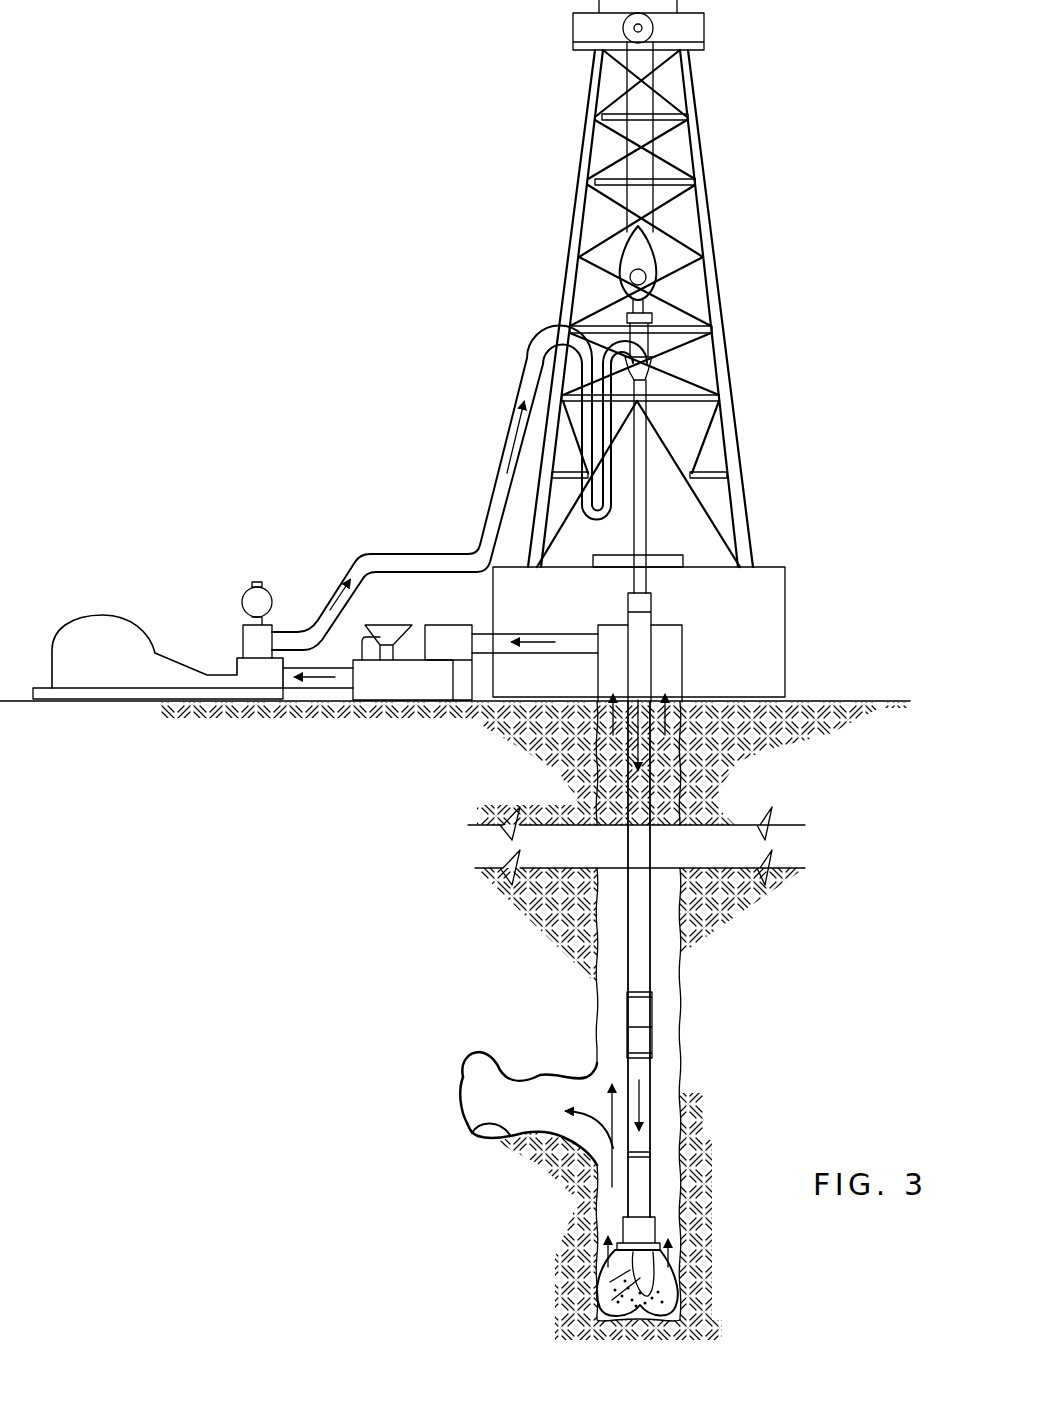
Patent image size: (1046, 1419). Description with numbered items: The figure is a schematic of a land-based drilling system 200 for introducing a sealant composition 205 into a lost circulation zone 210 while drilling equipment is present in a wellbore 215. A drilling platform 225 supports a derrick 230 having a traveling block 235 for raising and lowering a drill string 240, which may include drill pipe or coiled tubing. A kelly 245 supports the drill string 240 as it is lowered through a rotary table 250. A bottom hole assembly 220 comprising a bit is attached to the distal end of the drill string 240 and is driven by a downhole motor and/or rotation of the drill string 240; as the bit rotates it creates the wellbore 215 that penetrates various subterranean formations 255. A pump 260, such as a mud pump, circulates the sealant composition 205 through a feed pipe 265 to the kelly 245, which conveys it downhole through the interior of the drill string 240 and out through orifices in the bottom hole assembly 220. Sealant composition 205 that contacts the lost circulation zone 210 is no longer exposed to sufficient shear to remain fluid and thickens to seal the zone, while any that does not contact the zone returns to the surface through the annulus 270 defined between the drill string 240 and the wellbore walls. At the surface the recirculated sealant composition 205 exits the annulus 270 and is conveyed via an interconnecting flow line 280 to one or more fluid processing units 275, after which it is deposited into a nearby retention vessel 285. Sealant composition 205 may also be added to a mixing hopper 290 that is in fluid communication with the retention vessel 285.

The system 200 is at (384, 216).
The sealant composition 205 is at (342, 592).
The lost circulation zone 210 is at (468, 1140).
The wellbore 215 is at (680, 1036).
The bottom hole assembly 220 is at (657, 1280).
The drilling platform 225 is at (788, 634).
The derrick 230 is at (710, 302).
The traveling block 235 is at (660, 262).
The drill string 240 is at (652, 942).
The kelly 245 is at (645, 528).
The rotary table 250 is at (682, 561).
The subterranean formations 255 is at (490, 962).
The pump 260 is at (93, 615).
The feed pipe 265 is at (428, 546).
The annulus 270 is at (676, 1074).
The fluid processing unit 275 is at (455, 623).
The interconnecting flow line 280 is at (581, 624).
The retention vessel 285 is at (404, 690).
The mixing hopper 290 is at (397, 623).